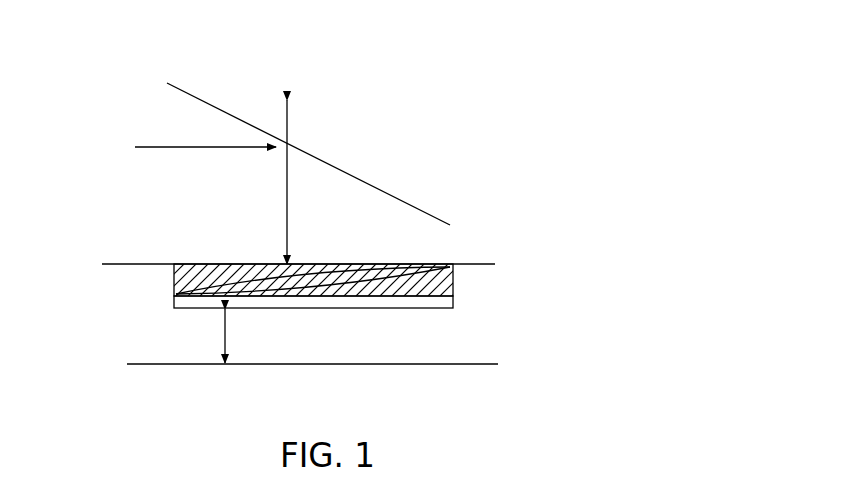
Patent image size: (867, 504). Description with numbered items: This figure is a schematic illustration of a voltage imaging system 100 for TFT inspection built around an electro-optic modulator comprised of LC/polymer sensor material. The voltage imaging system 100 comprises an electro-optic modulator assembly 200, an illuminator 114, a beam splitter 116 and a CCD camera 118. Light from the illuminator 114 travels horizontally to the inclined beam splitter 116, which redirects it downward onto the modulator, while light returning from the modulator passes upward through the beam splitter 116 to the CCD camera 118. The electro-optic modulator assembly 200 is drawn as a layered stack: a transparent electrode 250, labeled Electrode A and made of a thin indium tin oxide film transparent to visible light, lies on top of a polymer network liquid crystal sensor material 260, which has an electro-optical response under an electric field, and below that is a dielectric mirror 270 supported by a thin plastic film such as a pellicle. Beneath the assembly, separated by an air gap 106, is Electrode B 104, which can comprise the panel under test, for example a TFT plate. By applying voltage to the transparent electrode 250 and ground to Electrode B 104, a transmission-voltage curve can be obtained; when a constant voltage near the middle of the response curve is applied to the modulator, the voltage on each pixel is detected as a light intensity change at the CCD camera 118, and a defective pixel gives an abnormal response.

The voltage imaging system 100 is at (470, 74).
The Electrode B 104 is at (263, 364).
The air gap 106 is at (293, 336).
The illuminator 114 is at (152, 155).
The beam splitter 116 is at (239, 145).
The CCD camera 118 is at (316, 169).
The electro-optic modulator assembly 200 is at (489, 289).
The transparent electrode 250 is at (261, 265).
The polymer network liquid crystal sensor material 260 is at (454, 277).
The dielectric mirror 270 is at (454, 301).